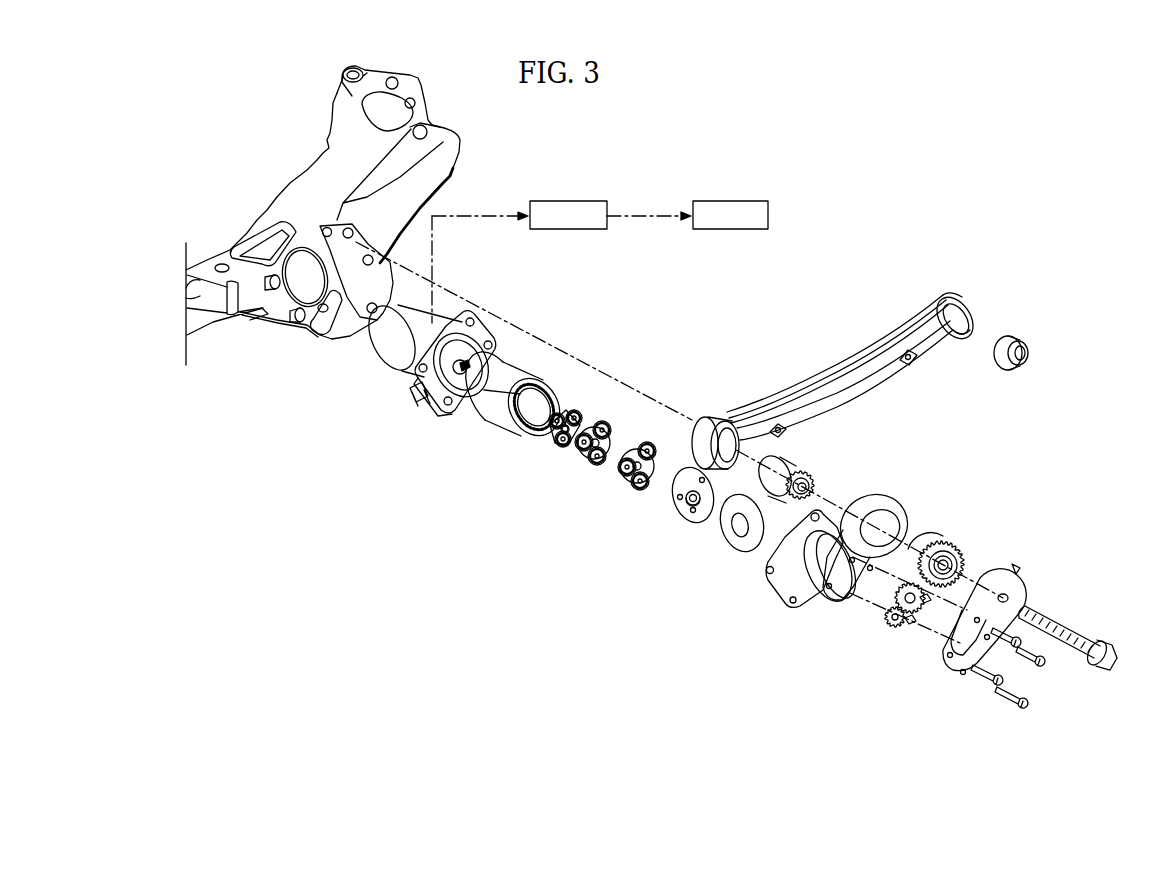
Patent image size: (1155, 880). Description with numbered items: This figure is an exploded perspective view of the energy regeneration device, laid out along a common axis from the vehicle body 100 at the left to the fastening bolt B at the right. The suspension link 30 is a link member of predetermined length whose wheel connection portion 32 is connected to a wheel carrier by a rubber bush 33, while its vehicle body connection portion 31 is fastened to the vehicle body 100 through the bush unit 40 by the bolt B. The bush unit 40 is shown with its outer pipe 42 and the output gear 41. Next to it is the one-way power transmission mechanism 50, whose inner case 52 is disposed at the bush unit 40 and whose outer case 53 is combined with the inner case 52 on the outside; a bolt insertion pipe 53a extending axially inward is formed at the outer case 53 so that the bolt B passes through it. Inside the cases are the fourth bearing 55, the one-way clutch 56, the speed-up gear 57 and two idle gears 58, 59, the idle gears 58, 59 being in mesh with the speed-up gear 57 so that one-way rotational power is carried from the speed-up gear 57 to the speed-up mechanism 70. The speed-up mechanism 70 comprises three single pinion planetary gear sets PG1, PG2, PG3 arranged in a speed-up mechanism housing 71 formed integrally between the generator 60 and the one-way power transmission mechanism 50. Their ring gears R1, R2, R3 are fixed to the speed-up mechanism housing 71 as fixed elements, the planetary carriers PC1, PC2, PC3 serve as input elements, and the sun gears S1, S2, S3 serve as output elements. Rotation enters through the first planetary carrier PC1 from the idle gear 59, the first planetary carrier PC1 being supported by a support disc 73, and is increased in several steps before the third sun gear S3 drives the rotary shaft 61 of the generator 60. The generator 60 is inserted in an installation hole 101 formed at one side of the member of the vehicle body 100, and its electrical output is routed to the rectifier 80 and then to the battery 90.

The vehicle body 100 is at (323, 227).
The installation hole 101 is at (294, 283).
The generator 60 is at (417, 391).
The rotary shaft 61 is at (465, 375).
The rectifier 80 is at (568, 200).
The battery 90 is at (730, 200).
The ring gear R1 is at (548, 400).
The ring gear R2 is at (531, 371).
The ring gear R3 is at (531, 364).
The sun gear S1 is at (650, 467).
The sun gear S2 is at (603, 445).
The third sun gear S3 is at (570, 430).
The planetary gear set PG1 is at (651, 512).
The planetary gear set PG2 is at (597, 510).
The planetary gear set PG3 is at (545, 461).
The first planetary carrier PC1 is at (686, 522).
The planetary carrier PC2 is at (622, 480).
The planetary carrier PC3 is at (554, 443).
The speed-up mechanism 70 is at (652, 508).
The support disc 73 is at (742, 542).
The suspension link 30 is at (828, 365).
The vehicle body connection portion 31 is at (706, 428).
The wheel connection portion 32 is at (946, 300).
The rubber bush 33 is at (1028, 362).
The bush unit 40 is at (815, 460).
The output gear 41 is at (812, 465).
The outer pipe 42 is at (790, 466).
The speed-up mechanism housing 71 is at (800, 578).
The inner case 52 is at (872, 492).
The one-way power transmission mechanism 50 is at (950, 586).
The fourth bearing 55 is at (953, 566).
The one-way clutch 56 is at (990, 551).
The speed-up gear 57 is at (990, 541).
The idle gear 58 is at (890, 600).
The idle gear 59 is at (895, 622).
The outer case 53 is at (1006, 630).
The bolt insertion pipe 53a is at (1010, 596).
The bolt B is at (1108, 650).